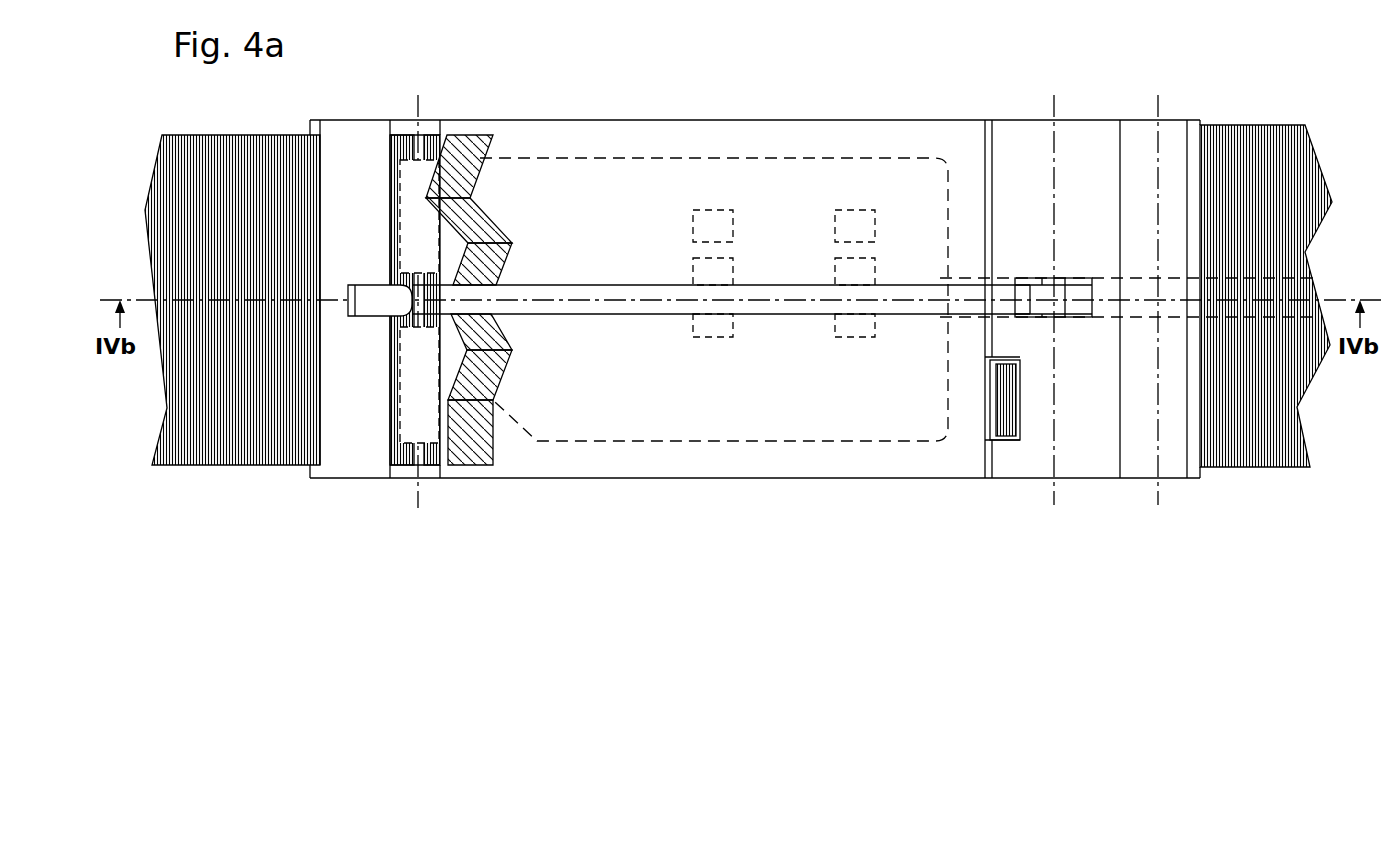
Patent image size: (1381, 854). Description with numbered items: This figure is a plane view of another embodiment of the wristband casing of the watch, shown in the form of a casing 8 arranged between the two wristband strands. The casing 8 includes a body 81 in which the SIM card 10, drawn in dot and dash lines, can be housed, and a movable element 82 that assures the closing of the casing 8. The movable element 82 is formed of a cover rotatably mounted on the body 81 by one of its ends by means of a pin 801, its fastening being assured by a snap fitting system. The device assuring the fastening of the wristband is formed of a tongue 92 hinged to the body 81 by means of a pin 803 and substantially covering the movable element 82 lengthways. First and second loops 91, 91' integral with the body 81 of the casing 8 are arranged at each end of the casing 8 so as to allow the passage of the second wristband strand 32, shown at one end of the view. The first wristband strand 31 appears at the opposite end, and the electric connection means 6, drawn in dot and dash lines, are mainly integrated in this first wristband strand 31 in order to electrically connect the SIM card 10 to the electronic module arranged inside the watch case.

The casing 8 is at (905, 88).
The first loop 91 is at (355, 268).
The second loop 91' is at (1183, 282).
The movable element 82 is at (570, 146).
The body 81 is at (1098, 135).
The tongue 92 is at (368, 290).
The second wristband strand 32 is at (235, 460).
The first wristband strand 31 is at (1250, 464).
The pin 801 is at (419, 499).
The pin 803 is at (1053, 498).
The SIM card 10 is at (693, 444).
The electric connection means 6 is at (1258, 278).